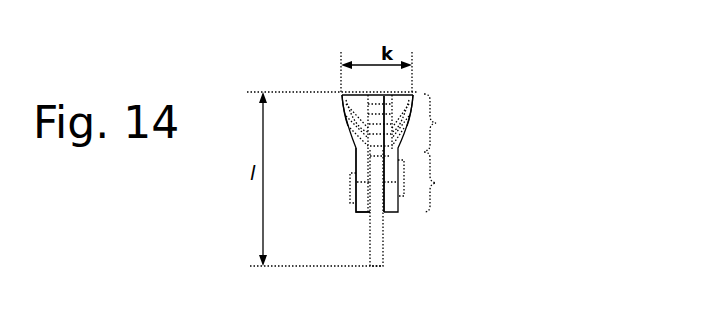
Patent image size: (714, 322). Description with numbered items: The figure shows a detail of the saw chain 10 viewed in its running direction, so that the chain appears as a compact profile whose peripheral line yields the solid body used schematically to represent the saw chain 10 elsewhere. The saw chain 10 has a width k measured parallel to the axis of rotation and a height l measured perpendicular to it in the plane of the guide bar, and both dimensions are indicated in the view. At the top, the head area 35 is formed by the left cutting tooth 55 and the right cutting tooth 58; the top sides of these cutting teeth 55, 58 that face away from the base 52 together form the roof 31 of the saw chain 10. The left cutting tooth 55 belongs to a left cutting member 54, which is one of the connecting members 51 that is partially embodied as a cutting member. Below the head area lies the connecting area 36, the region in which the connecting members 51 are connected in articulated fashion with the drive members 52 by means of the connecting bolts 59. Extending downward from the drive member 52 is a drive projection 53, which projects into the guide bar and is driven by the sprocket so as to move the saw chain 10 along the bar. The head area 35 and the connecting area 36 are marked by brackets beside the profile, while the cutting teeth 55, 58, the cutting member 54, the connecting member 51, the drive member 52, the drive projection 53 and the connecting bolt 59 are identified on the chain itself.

The saw chain 10 is at (524, 130).
The roof 31 is at (374, 94).
The head area 35 is at (446, 122).
The connecting area 36 is at (448, 182).
The connecting member 51 is at (393, 192).
The drive member 52 is at (375, 205).
The drive projection 53 is at (374, 257).
The left cutting member 54 is at (362, 161).
The left cutting tooth 55 is at (342, 94).
The right cutting tooth 58 is at (411, 93).
The connecting bolt 59 is at (354, 190).